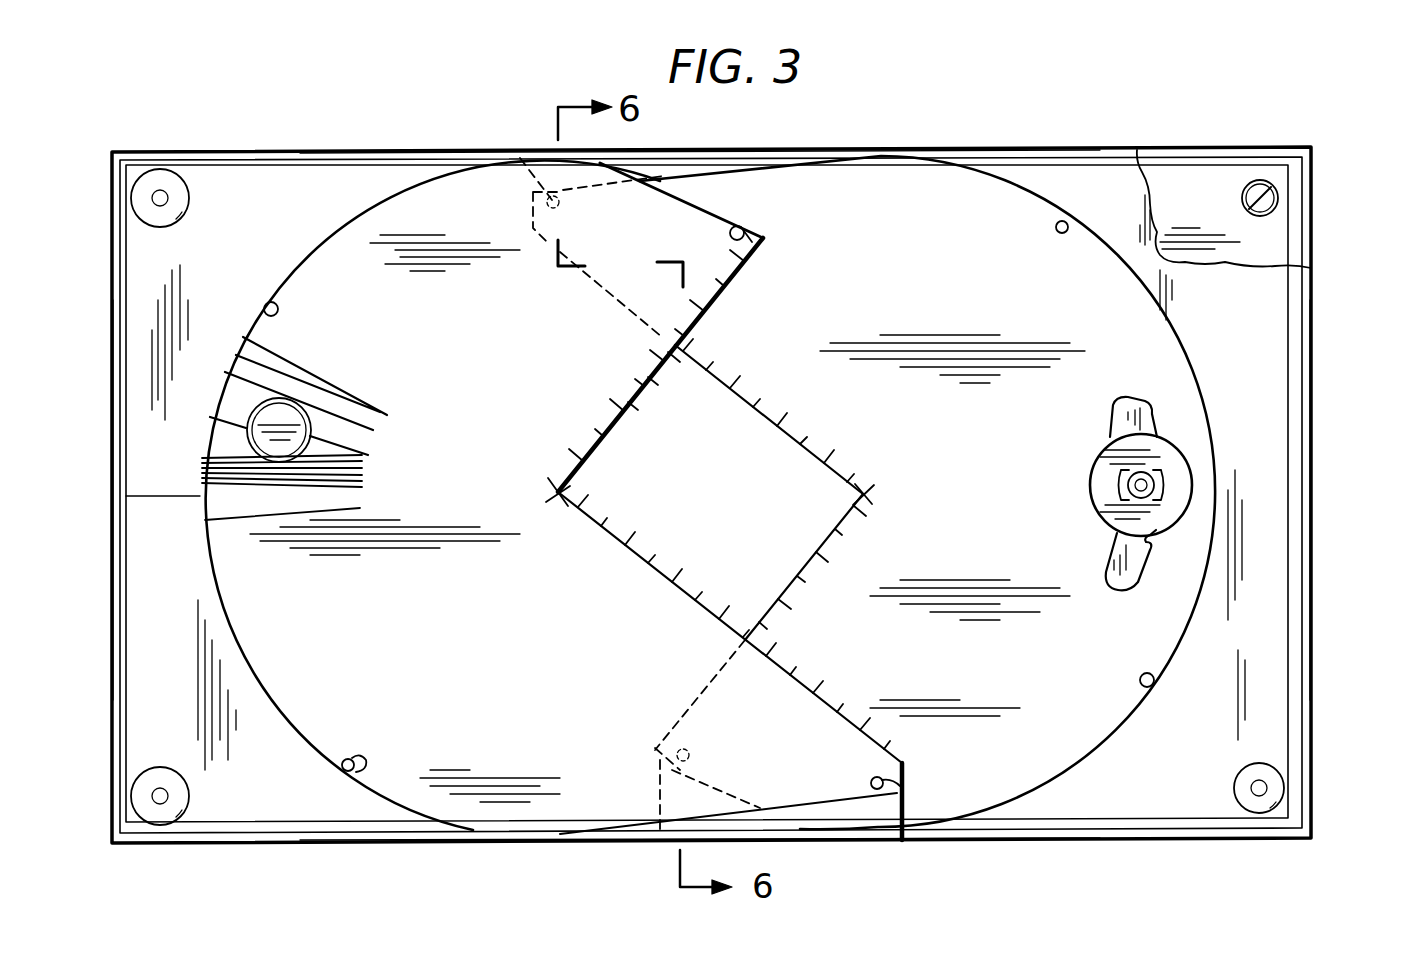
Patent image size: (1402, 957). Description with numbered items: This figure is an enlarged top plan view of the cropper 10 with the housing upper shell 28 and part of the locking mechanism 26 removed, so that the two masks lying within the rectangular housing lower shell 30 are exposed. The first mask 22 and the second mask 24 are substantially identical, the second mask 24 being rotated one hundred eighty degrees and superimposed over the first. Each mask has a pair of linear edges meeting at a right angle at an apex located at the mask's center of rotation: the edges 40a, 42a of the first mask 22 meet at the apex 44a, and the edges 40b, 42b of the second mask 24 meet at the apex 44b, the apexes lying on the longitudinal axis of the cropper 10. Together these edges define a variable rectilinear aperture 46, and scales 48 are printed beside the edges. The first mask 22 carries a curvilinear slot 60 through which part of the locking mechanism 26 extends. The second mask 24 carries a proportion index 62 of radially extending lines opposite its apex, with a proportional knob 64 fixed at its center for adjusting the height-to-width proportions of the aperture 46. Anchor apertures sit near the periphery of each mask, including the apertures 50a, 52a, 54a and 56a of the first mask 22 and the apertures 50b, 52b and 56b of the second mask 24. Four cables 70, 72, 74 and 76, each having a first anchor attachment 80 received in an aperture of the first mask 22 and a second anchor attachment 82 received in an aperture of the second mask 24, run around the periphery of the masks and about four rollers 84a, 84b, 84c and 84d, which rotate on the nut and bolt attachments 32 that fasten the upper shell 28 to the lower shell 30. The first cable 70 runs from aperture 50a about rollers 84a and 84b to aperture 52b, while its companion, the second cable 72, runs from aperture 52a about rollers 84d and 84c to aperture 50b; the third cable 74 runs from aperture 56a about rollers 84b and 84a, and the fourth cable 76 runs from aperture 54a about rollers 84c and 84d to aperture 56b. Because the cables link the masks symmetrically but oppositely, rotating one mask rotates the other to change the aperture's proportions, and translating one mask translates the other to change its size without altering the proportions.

The cropper 10 is at (388, 852).
The first mask 22 is at (942, 492).
The second mask 24 is at (406, 495).
The locking mechanism 26 is at (1195, 440).
The housing upper shell 28 is at (1178, 176).
The housing lower shell 30 is at (1300, 827).
The nut and bolt attachments 32 is at (1278, 207).
The first linear edge of first mask 40a is at (797, 575).
The first linear edge of second mask 40b is at (640, 418).
The second linear edge of first mask 42a is at (748, 415).
The second linear edge of second mask 42b is at (680, 582).
The apex of first mask 44a is at (866, 494).
The apex of second mask 44b is at (556, 492).
The rectilinear aperture 46 is at (702, 497).
The scales 48 is at (600, 406).
The first anchor aperture of first mask 50a is at (655, 818).
The first anchor aperture of second mask 50b is at (738, 225).
The second anchor aperture of first mask 52a is at (1142, 676).
The second anchor aperture of second mask 52b is at (279, 306).
The third anchor aperture of first mask 54a is at (1063, 234).
The fourth anchor aperture of first mask 56a is at (556, 162).
The fourth anchor aperture of second mask 56b is at (902, 840).
The curvilinear slot 60 is at (1152, 546).
The proportion index 62 is at (362, 478).
The proportional knob 64 is at (325, 412).
The first cable 70 is at (692, 167).
The second cable 72 is at (867, 822).
The third cable 74 is at (1292, 644).
The fourth cable 76 is at (128, 722).
The first anchor attachment 80 is at (1056, 229).
The second anchor attachment 82 is at (355, 762).
The roller 84a is at (1264, 778).
The roller 84b is at (1277, 213).
The roller 84c is at (162, 170).
The roller 84d is at (165, 805).